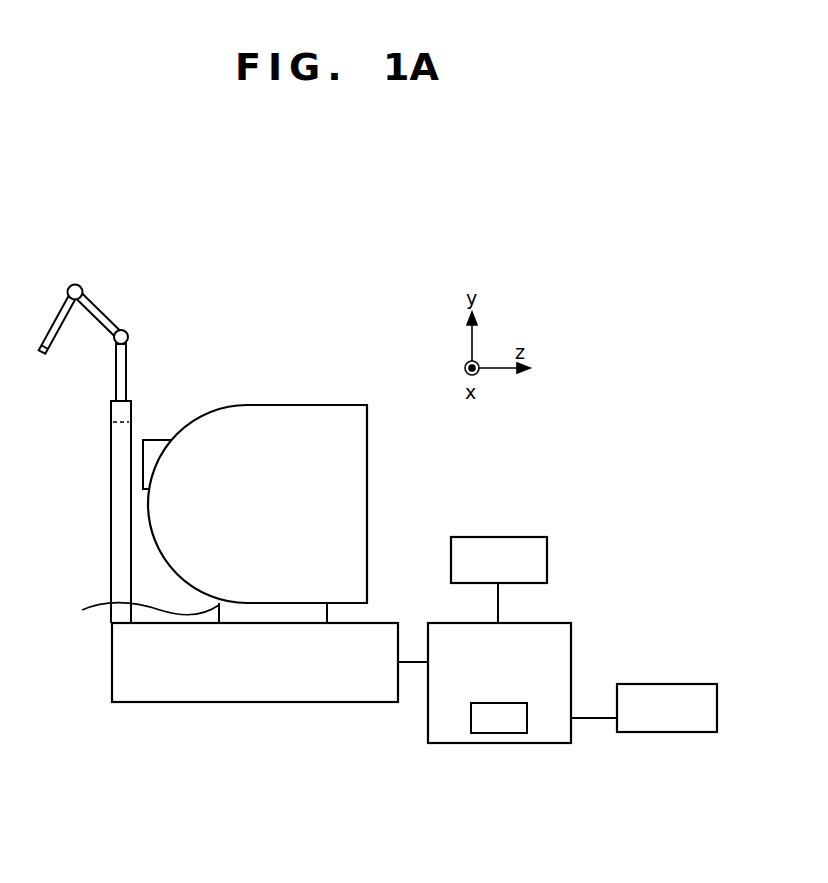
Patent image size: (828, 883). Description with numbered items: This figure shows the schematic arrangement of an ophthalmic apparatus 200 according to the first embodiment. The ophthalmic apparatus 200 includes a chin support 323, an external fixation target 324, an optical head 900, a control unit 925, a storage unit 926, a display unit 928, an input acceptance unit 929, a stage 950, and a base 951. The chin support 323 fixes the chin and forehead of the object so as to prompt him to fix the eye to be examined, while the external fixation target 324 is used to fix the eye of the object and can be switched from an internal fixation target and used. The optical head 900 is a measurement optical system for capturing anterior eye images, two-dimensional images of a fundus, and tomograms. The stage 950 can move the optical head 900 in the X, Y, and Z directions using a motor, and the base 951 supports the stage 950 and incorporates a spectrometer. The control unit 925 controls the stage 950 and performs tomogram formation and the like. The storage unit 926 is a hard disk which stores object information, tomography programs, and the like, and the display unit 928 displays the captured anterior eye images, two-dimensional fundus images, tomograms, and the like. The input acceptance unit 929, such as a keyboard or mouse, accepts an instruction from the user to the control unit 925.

The ophthalmic apparatus 200 is at (630, 392).
The chin support 323 is at (110, 466).
The external fixation target 324 is at (97, 298).
The optical head 900 is at (367, 484).
The control unit 925 is at (571, 632).
The storage unit 926 is at (516, 733).
The display unit 928 is at (547, 548).
The input acceptance unit 929 is at (697, 684).
The stage 950 is at (127, 615).
The base 951 is at (225, 702).